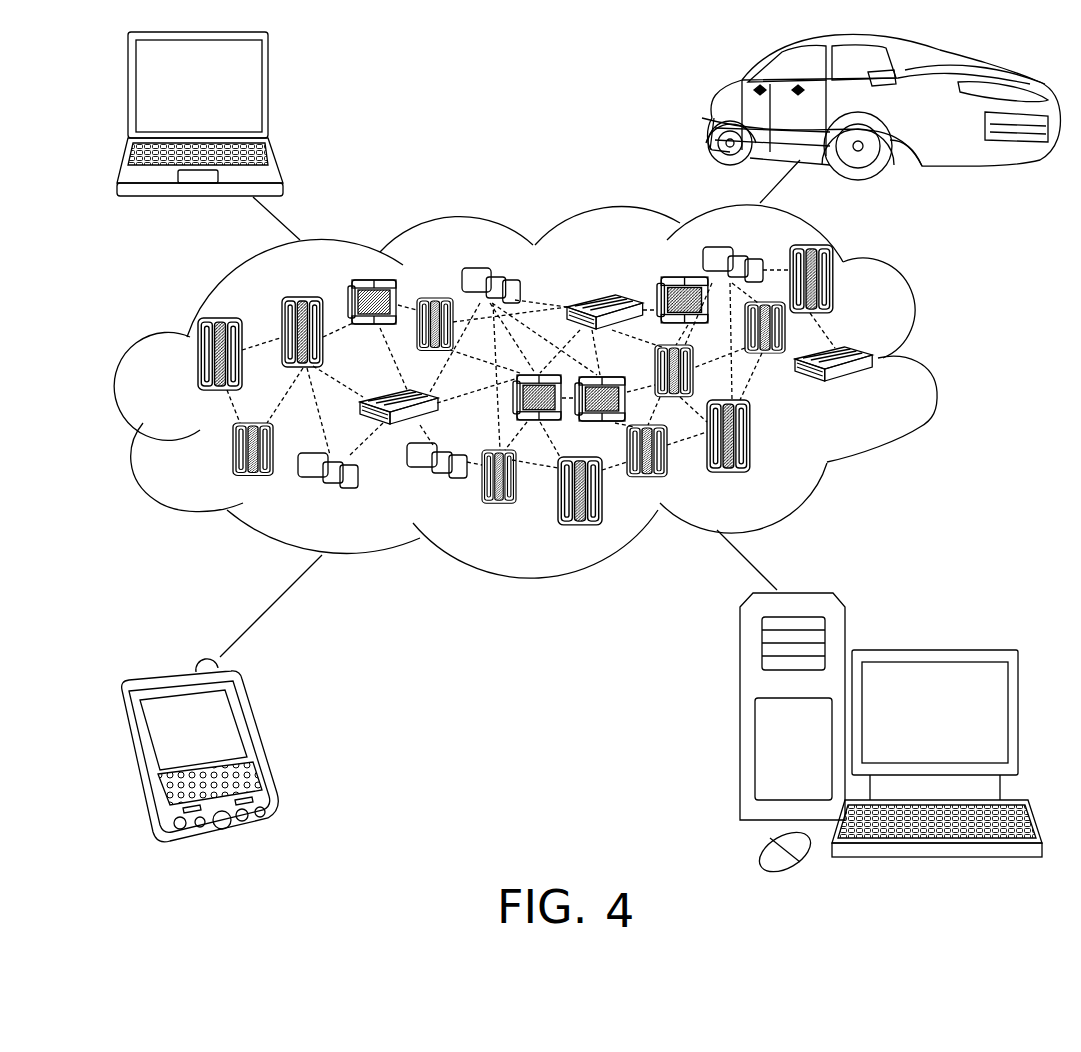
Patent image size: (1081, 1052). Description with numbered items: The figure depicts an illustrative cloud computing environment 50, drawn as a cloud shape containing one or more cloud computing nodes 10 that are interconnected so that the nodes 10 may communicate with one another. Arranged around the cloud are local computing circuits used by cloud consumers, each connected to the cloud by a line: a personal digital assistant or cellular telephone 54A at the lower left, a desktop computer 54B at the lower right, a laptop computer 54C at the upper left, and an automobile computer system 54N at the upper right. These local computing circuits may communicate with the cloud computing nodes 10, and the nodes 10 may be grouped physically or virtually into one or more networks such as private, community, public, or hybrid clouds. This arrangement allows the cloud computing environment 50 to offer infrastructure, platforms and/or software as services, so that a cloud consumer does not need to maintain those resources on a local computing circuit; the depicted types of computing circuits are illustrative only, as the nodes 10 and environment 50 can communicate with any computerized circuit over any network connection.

The cloud computing node 10 is at (876, 391).
The cloud computing environment 50 is at (933, 363).
The personal digital assistant or cellular telephone 54A is at (257, 743).
The desktop computer 54B is at (930, 648).
The laptop computer 54C is at (268, 93).
The automobile computer system 54N is at (712, 110).